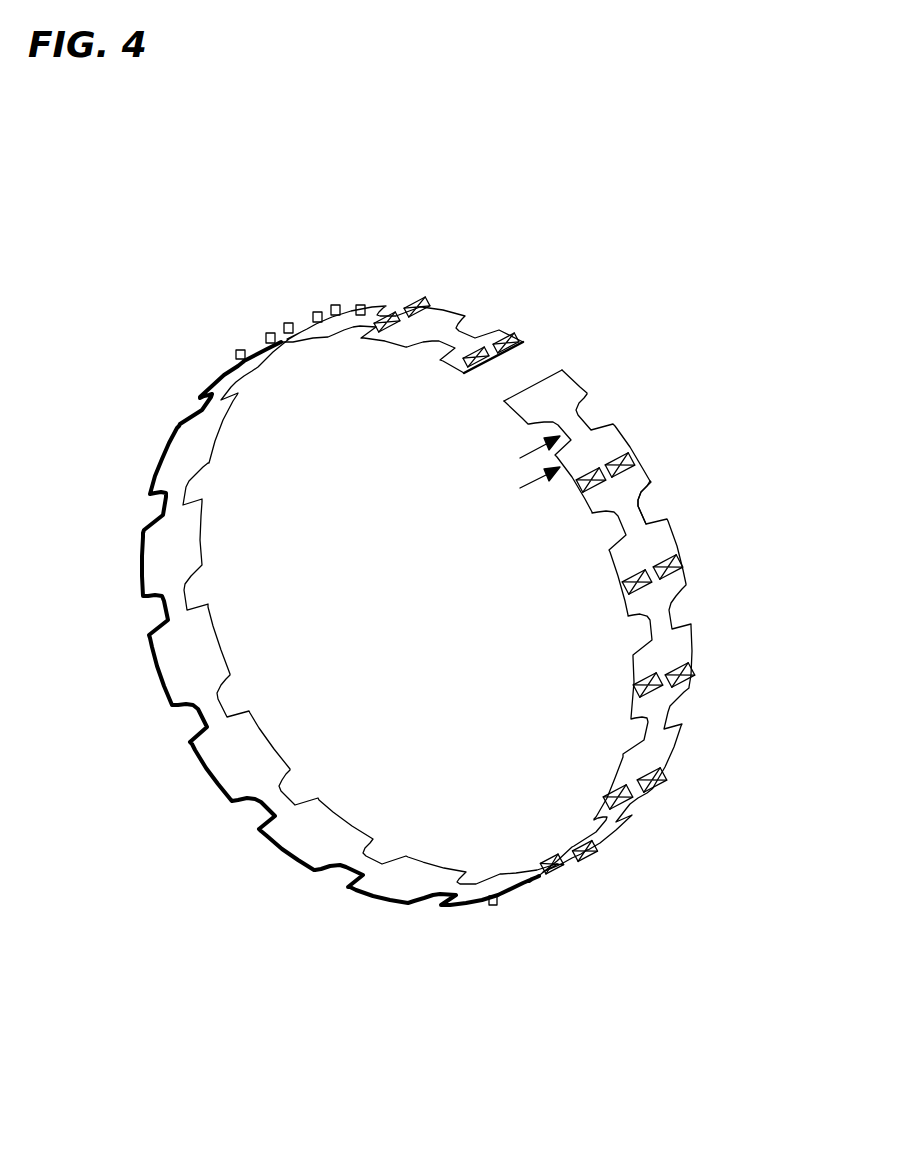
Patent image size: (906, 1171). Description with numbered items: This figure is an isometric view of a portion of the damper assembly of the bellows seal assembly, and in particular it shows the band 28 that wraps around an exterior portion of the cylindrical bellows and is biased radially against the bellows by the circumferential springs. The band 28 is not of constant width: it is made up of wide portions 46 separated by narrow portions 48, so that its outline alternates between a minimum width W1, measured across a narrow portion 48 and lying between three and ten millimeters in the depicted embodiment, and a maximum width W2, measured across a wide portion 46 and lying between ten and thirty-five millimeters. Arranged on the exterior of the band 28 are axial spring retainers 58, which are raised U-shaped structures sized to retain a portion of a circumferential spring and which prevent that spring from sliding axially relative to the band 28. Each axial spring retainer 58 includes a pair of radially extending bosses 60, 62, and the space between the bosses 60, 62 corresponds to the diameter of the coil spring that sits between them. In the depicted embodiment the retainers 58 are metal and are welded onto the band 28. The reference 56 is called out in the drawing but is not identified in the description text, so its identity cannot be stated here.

The band 28 is at (604, 376).
The minimum width W1 is at (597, 418).
The maximum width W2 is at (640, 428).
The wide portions 46 is at (650, 478).
The narrow portions 48 is at (648, 527).
The locking tab 56 is at (636, 818).
The axial spring retainers 58 is at (698, 772).
The radially extending boss 60 is at (551, 877).
The radially extending boss 62 is at (575, 870).